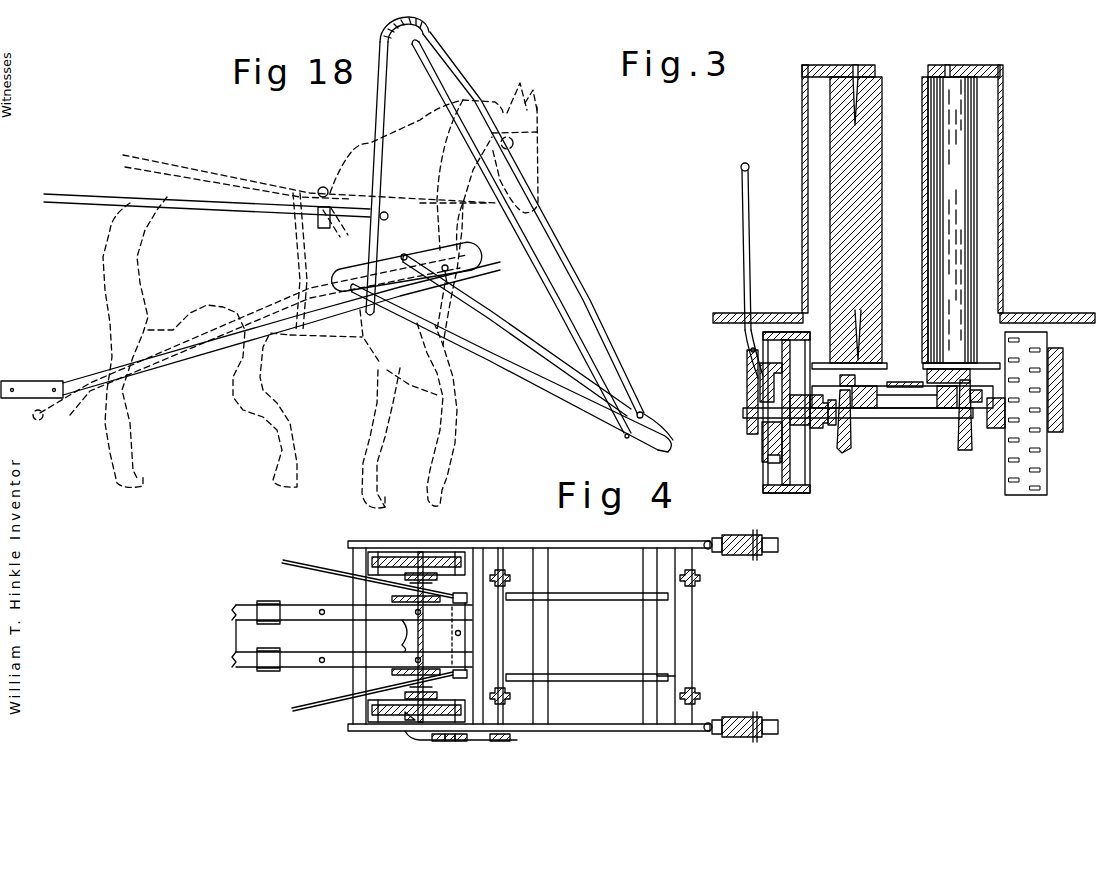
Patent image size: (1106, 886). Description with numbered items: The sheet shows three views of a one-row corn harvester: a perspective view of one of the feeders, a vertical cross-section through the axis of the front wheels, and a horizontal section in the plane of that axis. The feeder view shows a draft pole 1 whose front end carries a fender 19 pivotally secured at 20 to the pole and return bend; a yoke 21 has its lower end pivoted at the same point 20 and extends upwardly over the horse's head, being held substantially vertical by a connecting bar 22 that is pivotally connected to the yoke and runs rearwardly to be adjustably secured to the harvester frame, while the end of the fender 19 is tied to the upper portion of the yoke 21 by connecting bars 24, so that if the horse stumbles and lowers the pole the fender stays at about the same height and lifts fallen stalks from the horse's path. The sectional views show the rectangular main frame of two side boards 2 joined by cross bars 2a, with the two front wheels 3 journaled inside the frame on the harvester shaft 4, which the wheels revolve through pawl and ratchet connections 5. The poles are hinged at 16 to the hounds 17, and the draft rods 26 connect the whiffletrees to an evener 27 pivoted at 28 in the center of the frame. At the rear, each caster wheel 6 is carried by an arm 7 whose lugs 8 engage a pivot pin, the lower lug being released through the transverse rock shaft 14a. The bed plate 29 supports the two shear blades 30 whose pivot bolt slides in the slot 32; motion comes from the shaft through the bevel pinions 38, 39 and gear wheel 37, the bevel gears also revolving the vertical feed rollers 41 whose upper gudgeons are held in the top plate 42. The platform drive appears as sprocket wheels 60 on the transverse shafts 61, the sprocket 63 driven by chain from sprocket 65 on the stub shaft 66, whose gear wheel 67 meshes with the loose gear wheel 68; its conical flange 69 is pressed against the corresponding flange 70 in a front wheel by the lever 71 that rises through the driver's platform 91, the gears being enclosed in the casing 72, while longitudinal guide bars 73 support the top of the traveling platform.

In FIG. 18, the pole 1 is at (210, 348).
In FIG. 18, the connecting bar 22 is at (228, 200).
In FIG. 18, the yoke 21 is at (381, 98).
In FIG. 18, the connecting bars 24 is at (556, 306).
In FIG. 18, the fender 19 is at (543, 393).
In FIG. 18, the pivot 20 is at (409, 256).
In FIG. 3, the side board 2 is at (747, 391).
In FIG. 4, the side board 2 is at (597, 541).
In FIG. 4, the cross bar 2a is at (549, 640).
In FIG. 3, the front wheel 3 is at (810, 475).
In FIG. 4, the front wheel 3 is at (448, 556).
In FIG. 3, the harvester shaft 4 is at (866, 410).
In FIG. 4, the harvester shaft 4 is at (416, 678).
In FIG. 3, the pawl and ratchet connection 5 is at (834, 428).
In FIG. 4, the pawl and ratchet connection 5 is at (437, 580).
In FIG. 4, the rear wheel 6 is at (778, 544).
In FIG. 4, the arm 7 is at (712, 723).
In FIG. 4, the lug 8 is at (755, 718).
In FIG. 4, the transverse rock shaft 14a is at (670, 694).
In FIG. 4, the hinge 16 is at (283, 668).
In FIG. 4, the hound 17 is at (352, 630).
In FIG. 4, the draft rod 26 is at (330, 567).
In FIG. 4, the evener 27 is at (467, 595).
In FIG. 4, the pivot 28 is at (462, 634).
In FIG. 3, the bed plate 29 is at (977, 394).
In FIG. 3, the shear blade 30 is at (937, 410).
In FIG. 3, the slot 32 is at (900, 410).
In FIG. 3, the gear wheel 37 is at (970, 369).
In FIG. 3, the bevel pinion 38 is at (840, 380).
In FIG. 3, the bevel pinion 39 is at (846, 445).
In FIG. 4, the bevel pinion 39 is at (400, 668).
In FIG. 3, the vertical roller 41 is at (924, 141).
In FIG. 3, the top plate 42 is at (868, 65).
In FIG. 4, the sprocket wheel 60 is at (702, 578).
In FIG. 4, the transverse shaft 61 is at (693, 640).
In FIG. 4, the sprocket wheel 63 is at (512, 741).
In FIG. 4, the sprocket wheel 65 is at (452, 742).
In FIG. 4, the stub shaft 66 is at (462, 742).
In FIG. 4, the gear wheel 67 is at (440, 742).
In FIG. 3, the gear wheel 68 is at (765, 446).
In FIG. 4, the gear wheel 68 is at (412, 722).
In FIG. 3, the conical flange 69 is at (818, 430).
In FIG. 3, the flange 70 is at (770, 463).
In FIG. 3, the lever 71 is at (745, 341).
In FIG. 4, the box or casing 72 is at (522, 743).
In FIG. 4, the longitudinal guide bar 73 is at (614, 592).
In FIG. 3, the platform 91 is at (795, 313).